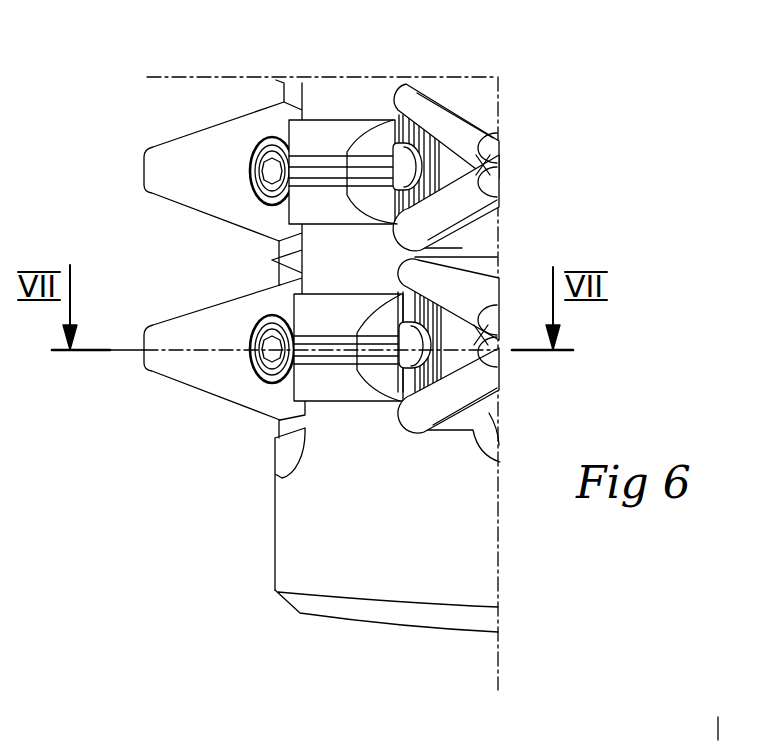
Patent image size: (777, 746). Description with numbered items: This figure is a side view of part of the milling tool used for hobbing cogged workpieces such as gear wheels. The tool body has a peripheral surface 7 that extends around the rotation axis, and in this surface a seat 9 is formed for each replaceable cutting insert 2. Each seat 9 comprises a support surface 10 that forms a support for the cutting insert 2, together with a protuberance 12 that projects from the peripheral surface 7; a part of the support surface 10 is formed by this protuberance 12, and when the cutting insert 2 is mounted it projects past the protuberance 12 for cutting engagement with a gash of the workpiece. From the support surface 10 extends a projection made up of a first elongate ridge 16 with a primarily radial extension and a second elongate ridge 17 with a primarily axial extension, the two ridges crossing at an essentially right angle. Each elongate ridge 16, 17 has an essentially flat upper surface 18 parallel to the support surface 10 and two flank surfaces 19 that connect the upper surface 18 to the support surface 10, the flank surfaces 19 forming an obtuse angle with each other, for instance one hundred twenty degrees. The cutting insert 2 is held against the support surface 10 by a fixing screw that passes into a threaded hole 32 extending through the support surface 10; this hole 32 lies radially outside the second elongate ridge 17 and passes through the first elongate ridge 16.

The cutting insert 2 is at (193, 378).
The peripheral surface 7 is at (307, 541).
The seat 9 is at (375, 118).
The support surface 10 is at (378, 375).
The protuberance 12 is at (307, 143).
The first elongate ridge 16 is at (357, 168).
The second elongate ridge 17 is at (435, 162).
The upper surface 18 is at (392, 166).
The flank surfaces 19 is at (380, 157).
The threaded hole 32 is at (403, 174).